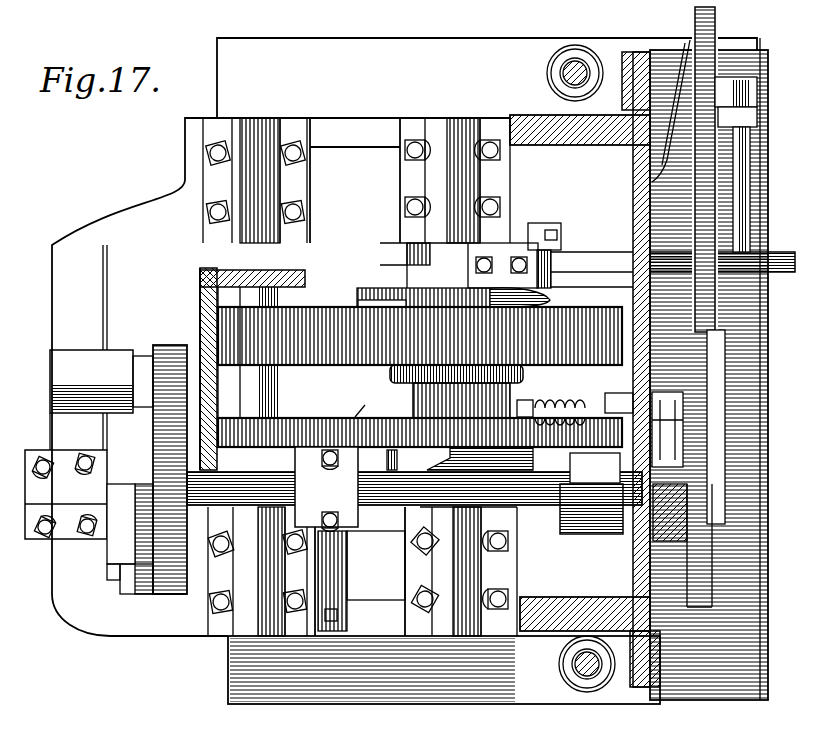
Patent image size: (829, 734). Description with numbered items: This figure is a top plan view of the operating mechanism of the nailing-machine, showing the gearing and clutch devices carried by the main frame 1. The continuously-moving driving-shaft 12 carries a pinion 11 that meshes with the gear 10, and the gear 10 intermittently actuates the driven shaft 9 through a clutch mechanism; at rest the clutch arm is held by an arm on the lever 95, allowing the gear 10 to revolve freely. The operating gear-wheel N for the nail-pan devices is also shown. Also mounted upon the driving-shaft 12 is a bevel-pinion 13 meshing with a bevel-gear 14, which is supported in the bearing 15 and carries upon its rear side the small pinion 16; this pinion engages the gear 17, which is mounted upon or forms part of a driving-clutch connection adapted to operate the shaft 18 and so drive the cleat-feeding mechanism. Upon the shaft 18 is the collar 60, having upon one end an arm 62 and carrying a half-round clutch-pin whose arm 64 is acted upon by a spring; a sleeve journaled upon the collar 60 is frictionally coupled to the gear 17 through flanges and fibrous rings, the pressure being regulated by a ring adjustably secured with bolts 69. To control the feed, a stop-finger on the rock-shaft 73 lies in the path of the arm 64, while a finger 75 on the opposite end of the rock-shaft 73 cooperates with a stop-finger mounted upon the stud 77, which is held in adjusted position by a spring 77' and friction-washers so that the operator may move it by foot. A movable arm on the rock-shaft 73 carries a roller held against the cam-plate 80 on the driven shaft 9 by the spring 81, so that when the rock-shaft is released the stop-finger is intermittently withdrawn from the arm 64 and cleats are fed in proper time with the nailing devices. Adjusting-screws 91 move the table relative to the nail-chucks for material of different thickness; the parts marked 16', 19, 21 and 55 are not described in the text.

The main frame 1 is at (598, 166).
The driven shaft 9 is at (505, 452).
The gear 10 is at (387, 353).
The pinion 11 is at (420, 352).
The driving-shaft 12 is at (283, 395).
The bevel-pinion 13 is at (306, 274).
The bevel-gear 14 is at (203, 280).
The bearing 15 is at (78, 362).
The small pinion 16 is at (170, 456).
The clutch member 16' is at (680, 436).
The gear 17 is at (170, 578).
The shaft 18 is at (396, 246).
The casing 19 is at (733, 369).
The lever 21 is at (686, 204).
The block 55 is at (668, 524).
The collar 60 is at (75, 494).
The arm 62 is at (122, 545).
The arm 64 is at (110, 576).
The bolts 69 is at (138, 496).
The rock-shaft 73 is at (543, 520).
The finger 75 is at (603, 527).
The stud 77 is at (562, 407).
The spring 77' is at (575, 400).
The cam-plate 80 is at (430, 470).
The spring 81 is at (368, 515).
The adjusting-screws 91 is at (548, 74).
The lever 95 is at (781, 262).
The operating gear-wheel N is at (367, 404).